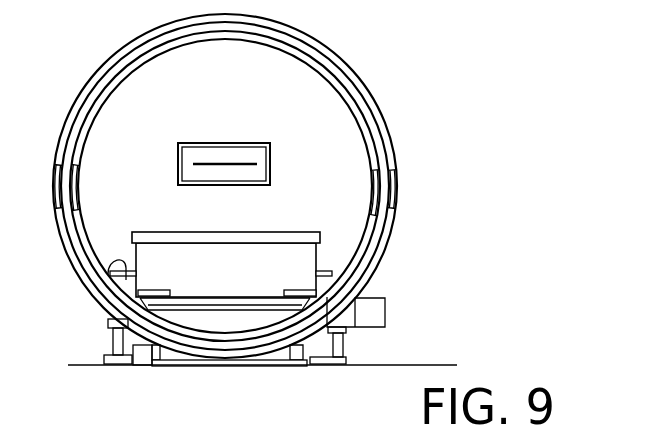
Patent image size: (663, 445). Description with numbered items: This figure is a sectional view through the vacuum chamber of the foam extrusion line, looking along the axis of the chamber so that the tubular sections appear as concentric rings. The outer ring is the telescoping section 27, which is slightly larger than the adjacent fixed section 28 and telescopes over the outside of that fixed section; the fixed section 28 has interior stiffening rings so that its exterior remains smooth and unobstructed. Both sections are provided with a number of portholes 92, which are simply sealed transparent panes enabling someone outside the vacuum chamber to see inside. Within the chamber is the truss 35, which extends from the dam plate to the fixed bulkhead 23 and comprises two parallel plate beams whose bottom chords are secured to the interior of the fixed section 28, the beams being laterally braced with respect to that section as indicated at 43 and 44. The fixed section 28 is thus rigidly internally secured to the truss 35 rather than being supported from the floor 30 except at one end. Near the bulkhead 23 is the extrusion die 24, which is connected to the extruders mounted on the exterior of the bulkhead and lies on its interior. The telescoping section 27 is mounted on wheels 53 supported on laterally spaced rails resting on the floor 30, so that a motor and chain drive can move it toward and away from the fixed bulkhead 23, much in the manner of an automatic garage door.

The fixed circular bulkhead 23 is at (328, 122).
The extrusion die 24 is at (245, 142).
The telescoping section 27 is at (389, 128).
The fixed section 28 is at (327, 73).
The floor 30 is at (423, 365).
The truss 35 is at (343, 255).
The lateral brace 43 is at (320, 277).
The lateral brace 44 is at (110, 262).
The wheels 53 is at (110, 352).
The portholes 92 is at (78, 190).